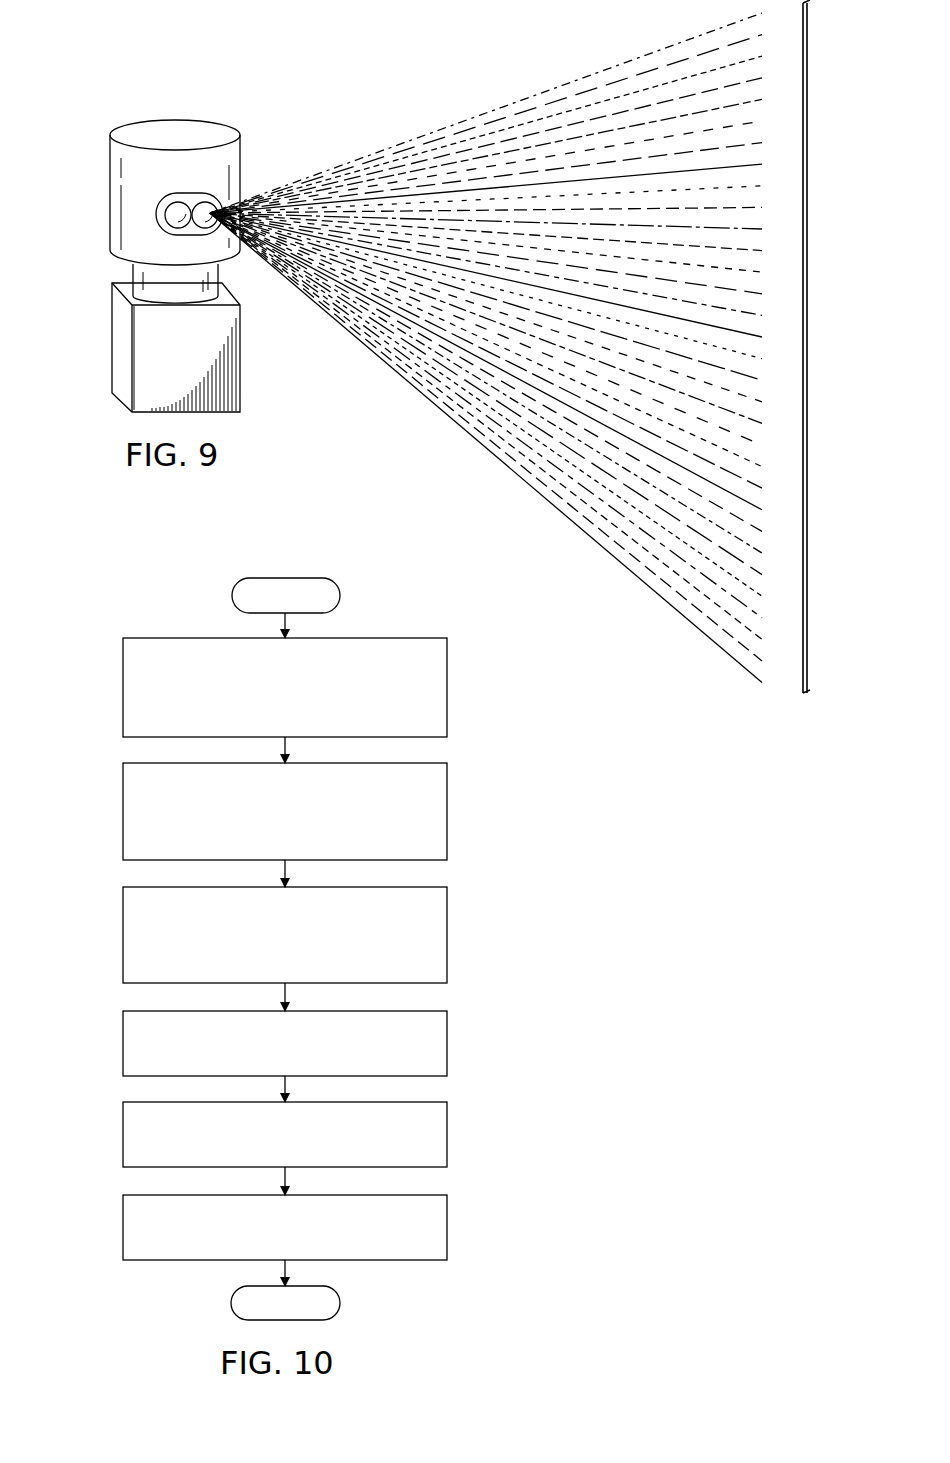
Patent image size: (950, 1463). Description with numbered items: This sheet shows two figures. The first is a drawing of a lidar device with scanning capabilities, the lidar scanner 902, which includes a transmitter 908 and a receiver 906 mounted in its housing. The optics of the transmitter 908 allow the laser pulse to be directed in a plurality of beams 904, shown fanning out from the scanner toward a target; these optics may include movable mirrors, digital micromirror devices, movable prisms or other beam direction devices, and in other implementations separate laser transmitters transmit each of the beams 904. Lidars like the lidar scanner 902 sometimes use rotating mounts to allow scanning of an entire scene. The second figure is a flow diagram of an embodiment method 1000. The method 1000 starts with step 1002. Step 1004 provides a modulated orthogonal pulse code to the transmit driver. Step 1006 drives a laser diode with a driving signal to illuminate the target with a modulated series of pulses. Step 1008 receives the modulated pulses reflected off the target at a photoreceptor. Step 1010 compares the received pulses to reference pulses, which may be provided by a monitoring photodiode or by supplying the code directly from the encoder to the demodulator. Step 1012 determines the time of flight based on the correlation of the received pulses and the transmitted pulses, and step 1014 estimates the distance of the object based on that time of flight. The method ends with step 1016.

In FIG. 9, the lidar scanner 902 is at (110, 205).
In FIG. 9, the beams 904 is at (807, 335).
In FIG. 9, the receiver 906 is at (174, 200).
In FIG. 9, the transmitter 908 is at (203, 200).
In FIG. 10, the method 1000 is at (373, 578).
In FIG. 10, the step 1002 is at (233, 596).
In FIG. 10, the step 1004 is at (123, 686).
In FIG. 10, the step 1006 is at (123, 811).
In FIG. 10, the step 1008 is at (123, 935).
In FIG. 10, the step 1010 is at (123, 1044).
In FIG. 10, the step 1012 is at (123, 1137).
In FIG. 10, the step 1014 is at (123, 1228).
In FIG. 10, the step 1016 is at (233, 1302).